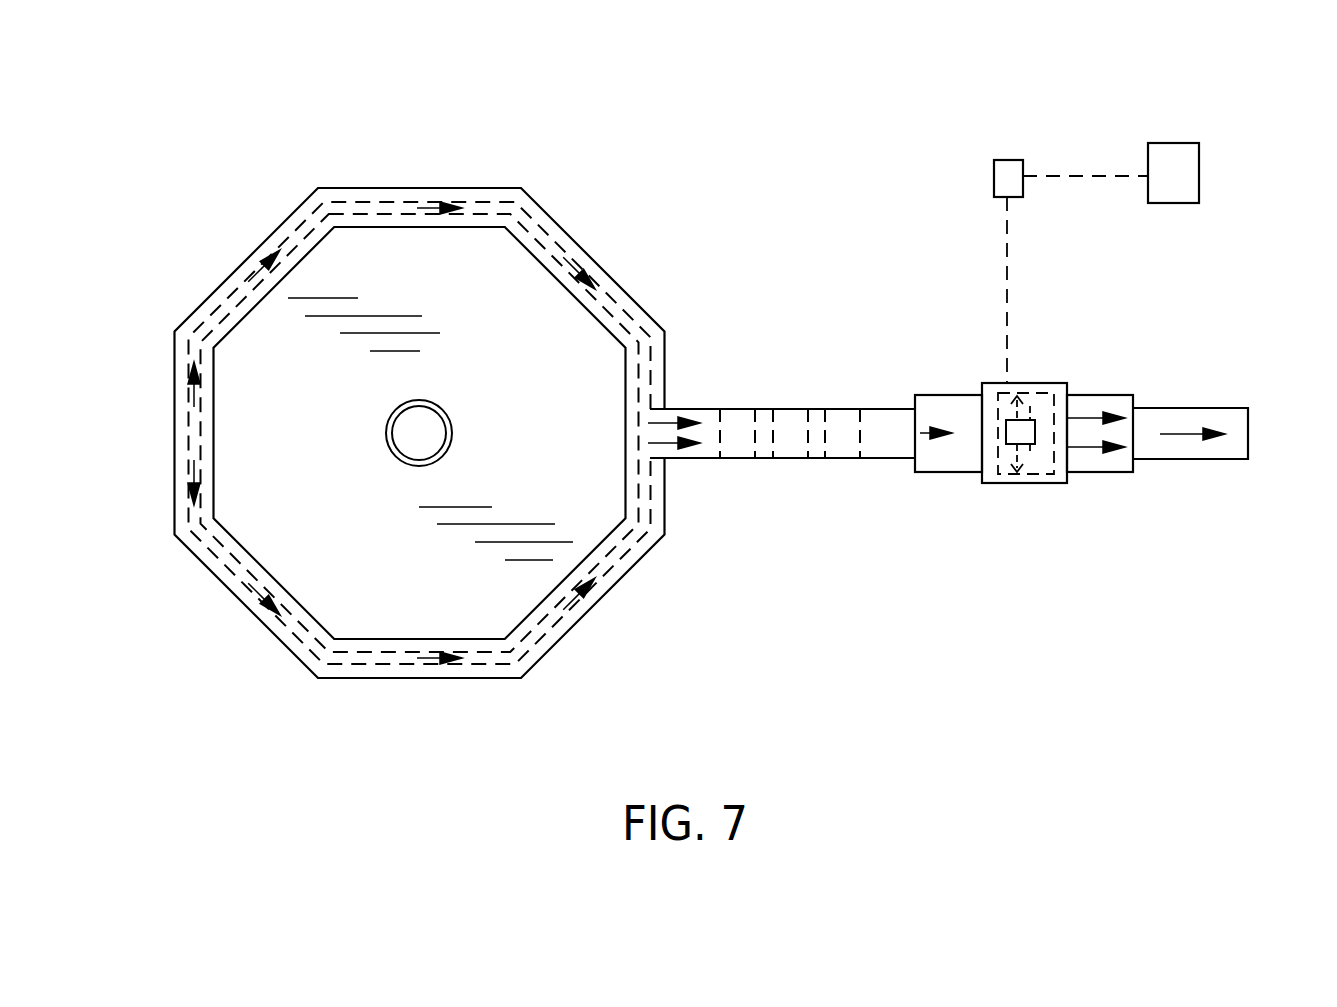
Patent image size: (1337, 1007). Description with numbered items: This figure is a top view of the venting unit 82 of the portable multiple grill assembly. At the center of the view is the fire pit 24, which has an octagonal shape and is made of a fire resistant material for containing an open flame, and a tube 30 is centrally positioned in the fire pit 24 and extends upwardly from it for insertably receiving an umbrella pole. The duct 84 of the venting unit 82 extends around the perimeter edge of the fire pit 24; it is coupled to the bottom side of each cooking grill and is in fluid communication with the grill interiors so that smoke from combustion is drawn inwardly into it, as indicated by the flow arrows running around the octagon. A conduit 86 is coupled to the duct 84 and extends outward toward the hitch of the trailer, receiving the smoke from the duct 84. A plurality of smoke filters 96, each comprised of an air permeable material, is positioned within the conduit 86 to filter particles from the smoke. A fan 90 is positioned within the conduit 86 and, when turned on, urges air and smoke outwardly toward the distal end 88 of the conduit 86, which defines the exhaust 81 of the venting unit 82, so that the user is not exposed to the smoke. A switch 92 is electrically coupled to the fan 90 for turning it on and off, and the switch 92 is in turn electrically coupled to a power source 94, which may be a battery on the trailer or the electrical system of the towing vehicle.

The fire pit 24 is at (432, 393).
The tube 30 is at (395, 458).
The exhaust 81 is at (1265, 452).
The venting unit 82 is at (890, 452).
The duct 84 is at (621, 588).
The conduit 86 is at (887, 462).
The distal end 88 is at (1234, 431).
The fan 90 is at (1031, 446).
The switch 92 is at (1007, 160).
The power source 94 is at (1173, 143).
The smoke filters 96 is at (722, 432).